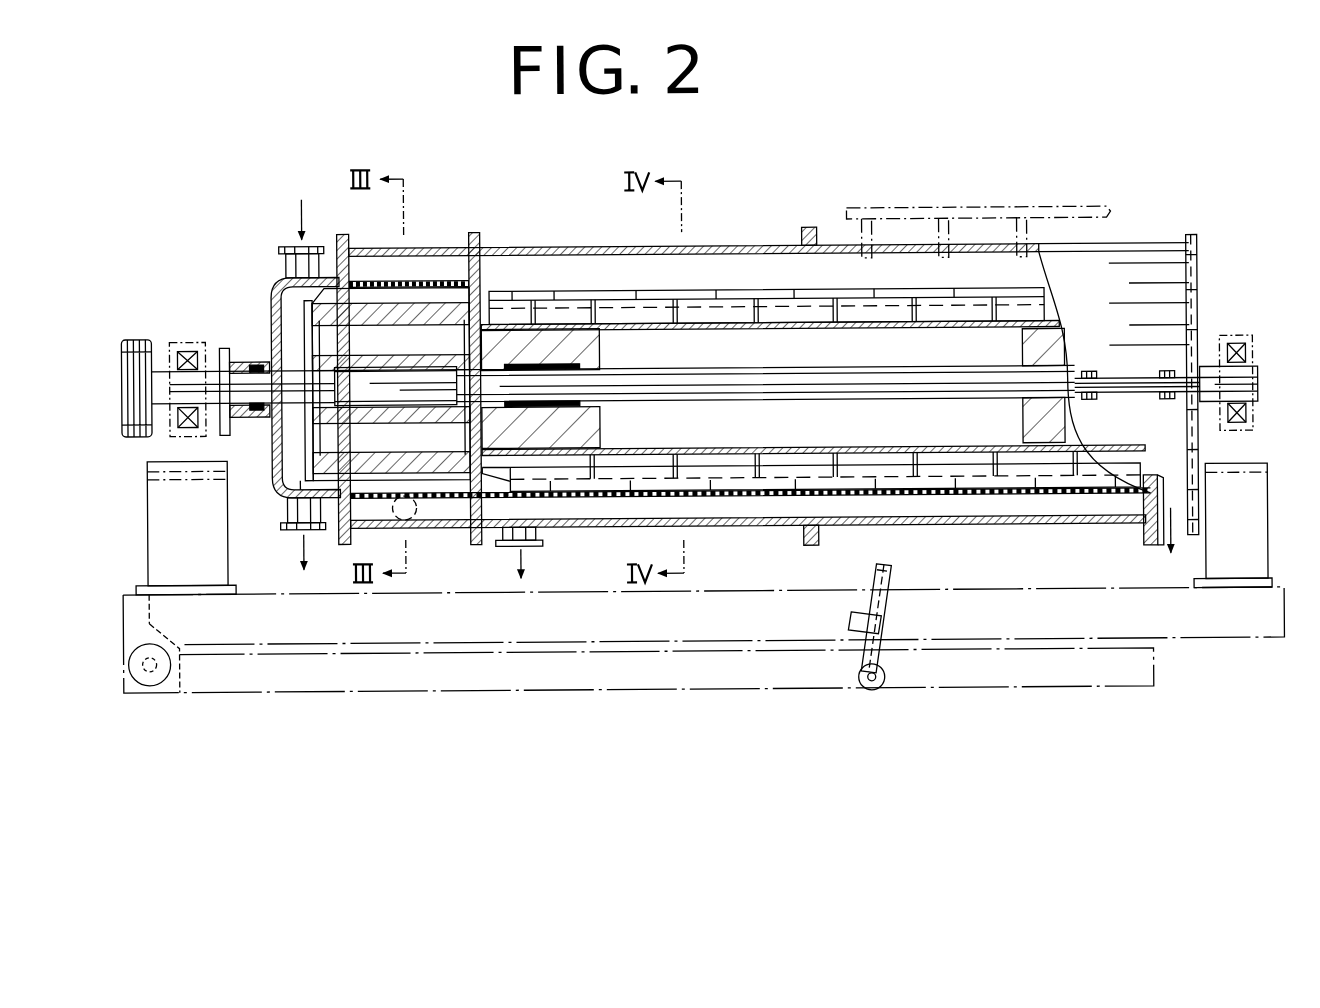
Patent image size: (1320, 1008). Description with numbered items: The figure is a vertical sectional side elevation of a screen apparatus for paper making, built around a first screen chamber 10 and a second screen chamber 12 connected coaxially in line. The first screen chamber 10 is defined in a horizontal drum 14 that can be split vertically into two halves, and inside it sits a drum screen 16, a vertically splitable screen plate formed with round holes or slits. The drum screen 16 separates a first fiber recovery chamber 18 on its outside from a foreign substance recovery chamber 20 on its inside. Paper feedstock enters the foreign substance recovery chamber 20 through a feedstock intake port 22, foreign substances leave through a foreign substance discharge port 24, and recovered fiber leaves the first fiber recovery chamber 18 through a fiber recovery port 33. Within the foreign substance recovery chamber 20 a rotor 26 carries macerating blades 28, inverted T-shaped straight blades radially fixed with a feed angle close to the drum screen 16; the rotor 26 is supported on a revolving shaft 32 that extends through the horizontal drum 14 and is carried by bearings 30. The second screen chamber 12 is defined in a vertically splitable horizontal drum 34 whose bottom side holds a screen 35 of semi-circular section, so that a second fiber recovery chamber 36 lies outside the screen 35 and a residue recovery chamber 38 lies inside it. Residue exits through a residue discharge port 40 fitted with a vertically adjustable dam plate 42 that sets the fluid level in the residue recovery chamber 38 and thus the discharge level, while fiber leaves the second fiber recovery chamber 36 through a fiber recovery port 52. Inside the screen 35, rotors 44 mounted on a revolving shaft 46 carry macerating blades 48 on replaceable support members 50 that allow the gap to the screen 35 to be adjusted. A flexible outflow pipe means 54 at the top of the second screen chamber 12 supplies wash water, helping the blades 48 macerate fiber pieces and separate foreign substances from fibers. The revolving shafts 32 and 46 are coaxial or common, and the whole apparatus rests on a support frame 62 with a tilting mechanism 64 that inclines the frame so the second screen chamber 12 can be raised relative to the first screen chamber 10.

The first screen chamber 10 is at (422, 236).
The second screen chamber 12 is at (732, 244).
The horizontal drum 14 is at (401, 243).
The drum screen 16 is at (373, 275).
The first fiber recovery chamber 18 is at (454, 258).
The foreign substance recovery chamber 20 is at (323, 504).
The feedstock intake port 22 is at (292, 242).
The foreign substance discharge port 24 is at (293, 527).
The rotor 26 is at (303, 467).
The macerating blades 28 is at (432, 522).
The bearings 30 is at (186, 341).
The revolving shaft 32 is at (216, 368).
The fiber recovery port 33 is at (398, 516).
The horizontal drum 34 is at (583, 245).
The screen 35 is at (567, 493).
The second fiber recovery chamber 36 is at (742, 514).
The residue recovery chamber 38 is at (923, 429).
The residue discharge port 40 is at (1163, 543).
The dam plate 42 is at (1167, 490).
The rotors 44 is at (600, 423).
The revolving shaft 46 is at (944, 368).
The macerating blades 48 is at (660, 294).
The support members 50 is at (505, 310).
The fiber recovery port 52 is at (510, 547).
The flexible outflow pipe means 54 is at (977, 207).
The support frame 62 is at (1165, 643).
The tilting mechanism 64 is at (898, 627).